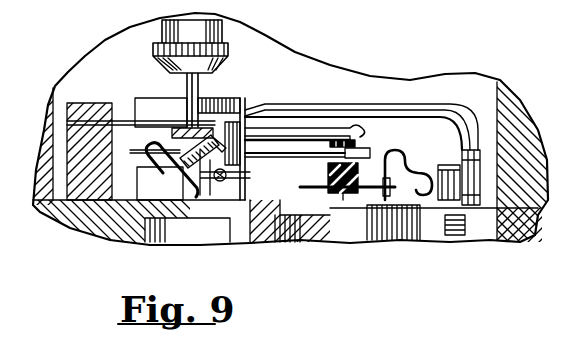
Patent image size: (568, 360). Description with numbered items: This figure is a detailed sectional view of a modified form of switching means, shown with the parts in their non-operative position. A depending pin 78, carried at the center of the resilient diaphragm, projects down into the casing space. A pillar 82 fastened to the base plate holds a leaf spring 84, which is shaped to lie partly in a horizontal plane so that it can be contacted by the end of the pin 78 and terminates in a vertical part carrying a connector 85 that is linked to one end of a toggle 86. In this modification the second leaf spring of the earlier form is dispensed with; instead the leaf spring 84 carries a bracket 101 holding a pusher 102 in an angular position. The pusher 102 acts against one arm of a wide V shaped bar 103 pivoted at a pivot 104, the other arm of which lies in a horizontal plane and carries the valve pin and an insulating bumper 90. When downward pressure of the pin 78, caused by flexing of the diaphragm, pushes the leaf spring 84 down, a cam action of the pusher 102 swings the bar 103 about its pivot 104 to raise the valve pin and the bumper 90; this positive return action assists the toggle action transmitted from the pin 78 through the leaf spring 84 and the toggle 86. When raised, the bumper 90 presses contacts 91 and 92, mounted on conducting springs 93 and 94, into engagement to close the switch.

The pin 78 is at (198, 100).
The pillar 82 is at (87, 198).
The leaf spring 84 is at (373, 104).
The connector 85 is at (448, 188).
The toggle 86 is at (404, 153).
The insulating bumper 90 is at (344, 196).
The contact 91 is at (330, 140).
The contact 92 is at (332, 145).
The conducting spring 93 is at (362, 133).
The conducting spring 94 is at (284, 157).
The bracket 101 is at (173, 120).
The pusher 102 is at (199, 190).
The wide V shaped bar 103 is at (182, 183).
The pivot 104 is at (223, 183).